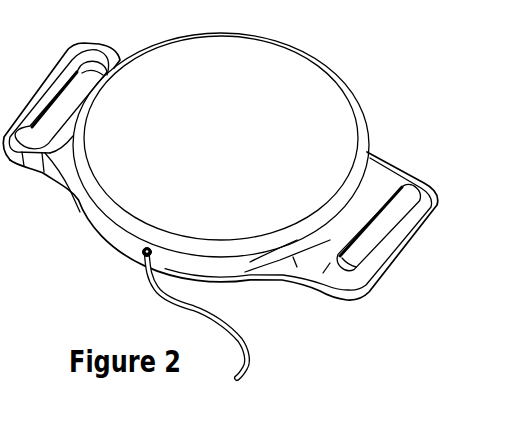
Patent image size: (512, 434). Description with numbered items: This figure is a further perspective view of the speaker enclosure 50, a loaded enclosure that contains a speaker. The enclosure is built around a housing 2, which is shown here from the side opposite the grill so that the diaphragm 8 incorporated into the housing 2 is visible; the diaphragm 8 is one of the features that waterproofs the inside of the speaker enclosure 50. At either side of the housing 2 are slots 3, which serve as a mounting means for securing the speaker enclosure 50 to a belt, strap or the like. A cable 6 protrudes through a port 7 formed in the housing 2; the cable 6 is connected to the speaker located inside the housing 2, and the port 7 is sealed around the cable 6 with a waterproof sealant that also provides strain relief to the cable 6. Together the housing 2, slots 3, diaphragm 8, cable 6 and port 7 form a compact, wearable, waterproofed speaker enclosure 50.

The housing 2 is at (143, 53).
The slots 3 is at (72, 100).
The cable 6 is at (167, 295).
The port 7 is at (143, 252).
The diaphragm 8 is at (277, 128).
The speaker enclosure 50 is at (404, 119).